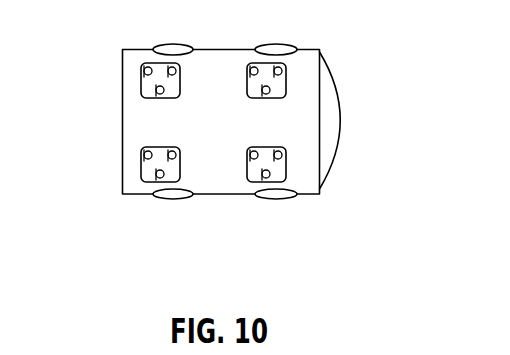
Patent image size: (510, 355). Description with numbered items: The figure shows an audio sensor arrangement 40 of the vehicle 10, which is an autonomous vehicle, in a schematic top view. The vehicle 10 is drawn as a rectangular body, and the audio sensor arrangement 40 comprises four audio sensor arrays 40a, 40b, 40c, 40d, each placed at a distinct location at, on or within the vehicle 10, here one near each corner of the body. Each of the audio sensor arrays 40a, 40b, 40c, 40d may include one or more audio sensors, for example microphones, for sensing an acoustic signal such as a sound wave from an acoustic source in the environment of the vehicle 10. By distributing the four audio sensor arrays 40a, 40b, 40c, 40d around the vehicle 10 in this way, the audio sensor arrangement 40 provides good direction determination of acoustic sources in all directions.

The vehicle 10 is at (145, 195).
The audio sensor arrangement 40 is at (145, 125).
The audio sensor array 40a is at (280, 165).
The audio sensor array 40b is at (280, 80).
The audio sensor array 40c is at (145, 80).
The audio sensor array 40d is at (145, 165).